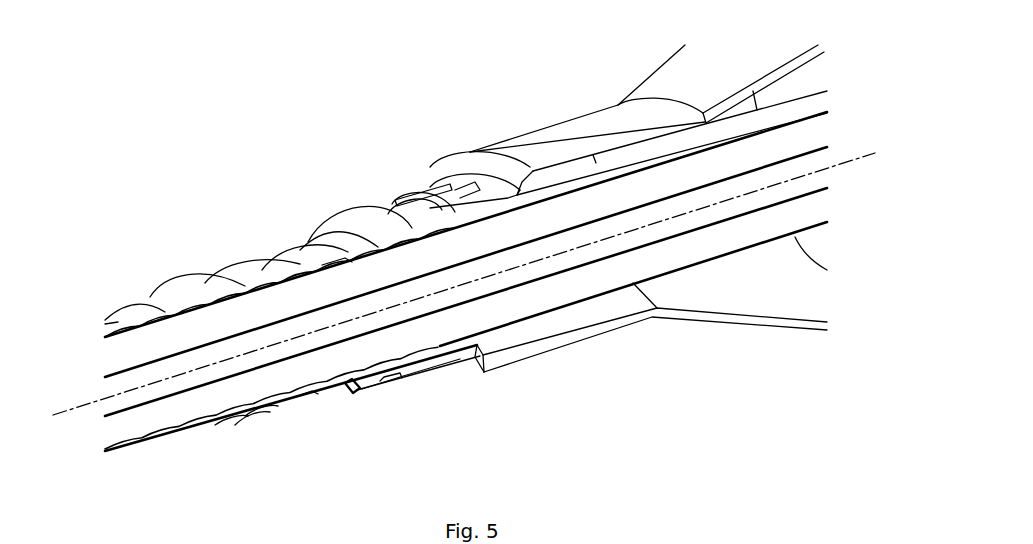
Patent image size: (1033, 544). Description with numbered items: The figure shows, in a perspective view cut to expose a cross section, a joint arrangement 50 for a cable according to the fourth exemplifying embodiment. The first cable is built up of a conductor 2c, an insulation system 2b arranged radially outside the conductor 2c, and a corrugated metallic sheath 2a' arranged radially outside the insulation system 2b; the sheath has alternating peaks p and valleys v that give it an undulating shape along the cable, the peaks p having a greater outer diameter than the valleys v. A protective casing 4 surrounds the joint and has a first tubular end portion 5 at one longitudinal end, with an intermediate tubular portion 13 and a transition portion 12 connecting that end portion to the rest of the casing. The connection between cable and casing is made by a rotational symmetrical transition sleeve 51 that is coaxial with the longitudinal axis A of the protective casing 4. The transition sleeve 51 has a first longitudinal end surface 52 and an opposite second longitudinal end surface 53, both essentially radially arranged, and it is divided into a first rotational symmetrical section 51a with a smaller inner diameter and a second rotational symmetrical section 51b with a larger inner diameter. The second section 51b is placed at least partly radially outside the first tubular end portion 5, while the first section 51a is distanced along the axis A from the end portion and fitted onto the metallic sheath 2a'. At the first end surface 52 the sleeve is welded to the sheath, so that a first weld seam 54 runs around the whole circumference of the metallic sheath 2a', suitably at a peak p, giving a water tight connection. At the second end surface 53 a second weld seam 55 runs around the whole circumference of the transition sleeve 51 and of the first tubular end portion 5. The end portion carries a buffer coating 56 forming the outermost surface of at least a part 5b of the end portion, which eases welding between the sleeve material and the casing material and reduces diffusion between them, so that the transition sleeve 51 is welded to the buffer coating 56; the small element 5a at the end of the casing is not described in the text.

The joint arrangement 50 is at (451, 92).
The transition portion 12 is at (670, 83).
The intermediate tubular portion 13 is at (583, 128).
The first tubular end portion 5 is at (455, 186).
The second weld seam 55 is at (415, 196).
The second rotational symmetrical section 51b is at (385, 207).
The transition sleeve 51 is at (347, 182).
The first rotational symmetrical section 51a is at (333, 240).
The first weld seam 54 is at (290, 248).
The corrugated metallic sheath 2a' is at (225, 250).
The insulation system 2b is at (173, 330).
The longitudinal axis A is at (76, 410).
The first longitudinal end surface 52 is at (343, 257).
The buffer coating 56 is at (452, 213).
The protective casing 4 is at (697, 318).
The conductor 2c is at (153, 390).
The peak p is at (235, 418).
The valley v is at (253, 412).
The sleeve end block 5a is at (357, 393).
The part of the first tubular end portion 5b is at (384, 381).
The second longitudinal end surface 53 is at (393, 380).